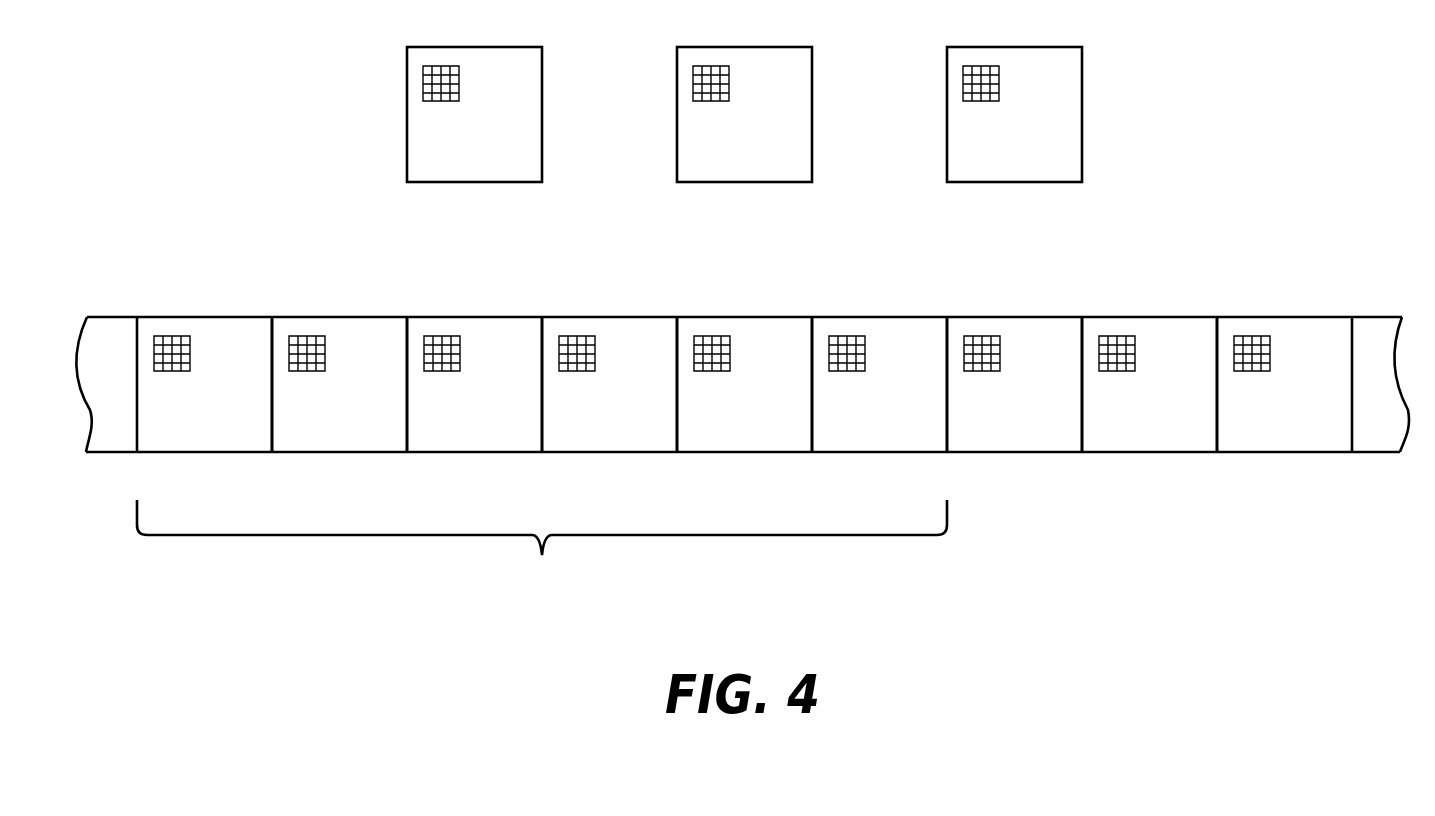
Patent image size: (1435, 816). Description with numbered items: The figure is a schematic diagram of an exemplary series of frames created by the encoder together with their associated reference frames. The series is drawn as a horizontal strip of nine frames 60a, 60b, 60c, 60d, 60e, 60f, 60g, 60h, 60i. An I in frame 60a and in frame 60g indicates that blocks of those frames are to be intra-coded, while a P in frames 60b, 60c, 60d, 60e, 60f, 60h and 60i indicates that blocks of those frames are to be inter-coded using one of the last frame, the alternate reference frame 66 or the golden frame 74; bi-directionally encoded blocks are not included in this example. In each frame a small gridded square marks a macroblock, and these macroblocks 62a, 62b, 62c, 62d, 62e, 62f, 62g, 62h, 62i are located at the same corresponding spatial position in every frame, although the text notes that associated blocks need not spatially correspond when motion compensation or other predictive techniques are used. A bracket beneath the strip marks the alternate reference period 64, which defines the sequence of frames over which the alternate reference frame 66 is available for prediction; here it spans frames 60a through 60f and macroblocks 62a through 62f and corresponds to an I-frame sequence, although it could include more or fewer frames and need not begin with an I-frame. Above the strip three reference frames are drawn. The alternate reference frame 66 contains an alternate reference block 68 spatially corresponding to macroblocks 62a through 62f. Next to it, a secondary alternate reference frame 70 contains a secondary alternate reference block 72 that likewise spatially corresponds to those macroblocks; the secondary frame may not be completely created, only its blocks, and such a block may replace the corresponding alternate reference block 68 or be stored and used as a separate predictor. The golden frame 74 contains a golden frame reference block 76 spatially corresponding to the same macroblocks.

The frame 60a is at (250, 452).
The frame 60b is at (393, 452).
The frame 60c is at (528, 452).
The frame 60d is at (663, 452).
The frame 60e is at (798, 452).
The frame 60f is at (933, 452).
The frame 60g is at (1068, 452).
The frame 60h is at (1203, 452).
The frame 60i is at (1338, 452).
The macroblock 62a is at (161, 336).
The macroblock 62b is at (296, 336).
The macroblock 62c is at (431, 336).
The macroblock 62d is at (566, 336).
The macroblock 62e is at (701, 336).
The macroblock 62f is at (836, 336).
The macroblock 62g is at (971, 336).
The macroblock 62h is at (1106, 336).
The macroblock 62i is at (1241, 336).
The alternate reference period 64 is at (542, 543).
The alternate reference frame 66 is at (522, 182).
The alternate reference block 68 is at (433, 66).
The secondary alternate reference frame 70 is at (792, 182).
The secondary alternate reference block 72 is at (703, 66).
The golden frame 74 is at (1062, 182).
The golden frame reference block 76 is at (973, 66).